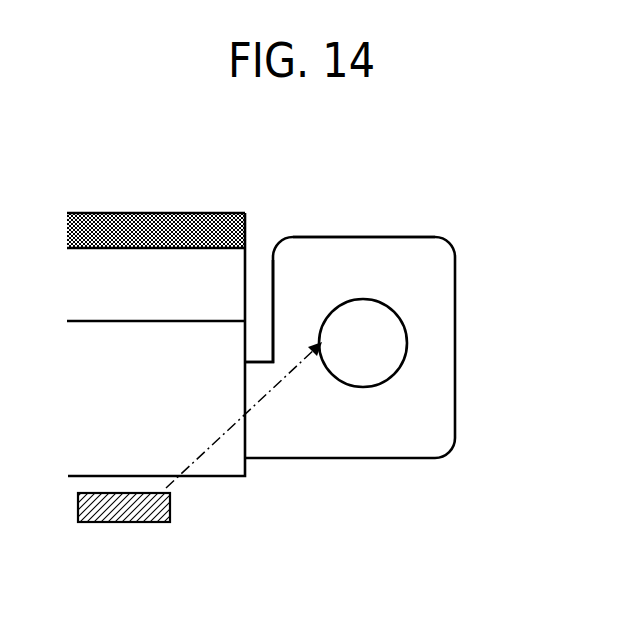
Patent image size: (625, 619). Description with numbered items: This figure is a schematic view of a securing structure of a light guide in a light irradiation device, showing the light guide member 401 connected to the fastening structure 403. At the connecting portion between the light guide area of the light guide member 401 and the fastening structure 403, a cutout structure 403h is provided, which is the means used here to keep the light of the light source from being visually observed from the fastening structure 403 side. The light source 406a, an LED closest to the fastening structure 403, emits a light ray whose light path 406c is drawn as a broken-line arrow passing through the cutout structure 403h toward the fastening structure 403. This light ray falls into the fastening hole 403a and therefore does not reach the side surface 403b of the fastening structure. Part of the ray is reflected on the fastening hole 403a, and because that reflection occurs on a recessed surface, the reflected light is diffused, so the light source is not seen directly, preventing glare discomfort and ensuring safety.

The light guide member 401 is at (224, 467).
The fastening structure 403 is at (445, 283).
The fastening hole 403a is at (395, 340).
The side surface 403b is at (387, 237).
The cutout structure 403h is at (258, 347).
The light source 406a is at (131, 515).
The light path 406c is at (283, 389).